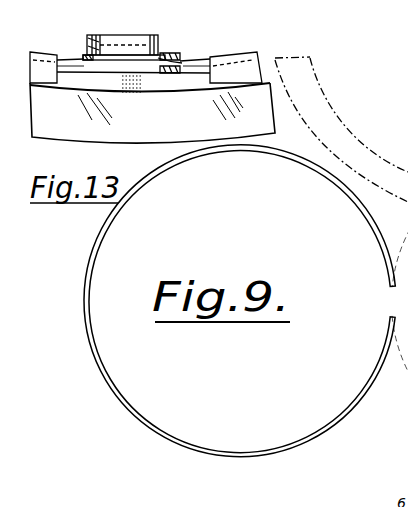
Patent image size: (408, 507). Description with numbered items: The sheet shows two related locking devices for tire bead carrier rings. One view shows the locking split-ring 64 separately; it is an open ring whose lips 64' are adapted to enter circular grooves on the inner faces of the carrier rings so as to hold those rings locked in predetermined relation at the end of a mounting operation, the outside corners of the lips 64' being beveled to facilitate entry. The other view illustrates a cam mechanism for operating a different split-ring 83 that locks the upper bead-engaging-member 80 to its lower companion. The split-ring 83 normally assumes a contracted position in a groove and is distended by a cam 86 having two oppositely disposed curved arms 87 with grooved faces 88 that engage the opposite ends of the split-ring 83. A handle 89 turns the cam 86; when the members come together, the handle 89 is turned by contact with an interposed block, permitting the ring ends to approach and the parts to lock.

In FIG. 13, the upper bead-engaging-member 80 is at (67, 128).
In FIG. 13, the split-ring 83 is at (69, 64).
In FIG. 13, the cam 86 is at (143, 36).
In FIG. 13, the curved arms 87 is at (95, 72).
In FIG. 13, the grooved faces 88 is at (166, 57).
In FIG. 13, the handle 89 is at (86, 41).
In FIG. 9, the locking split-ring 64 is at (239, 301).
In FIG. 9, the lips 64' is at (225, 302).